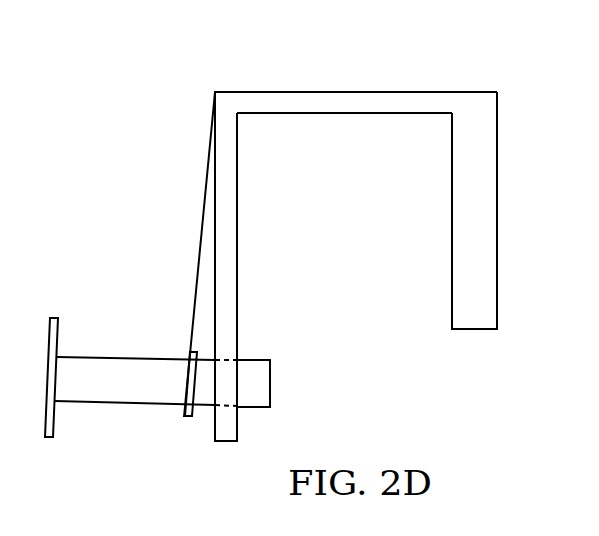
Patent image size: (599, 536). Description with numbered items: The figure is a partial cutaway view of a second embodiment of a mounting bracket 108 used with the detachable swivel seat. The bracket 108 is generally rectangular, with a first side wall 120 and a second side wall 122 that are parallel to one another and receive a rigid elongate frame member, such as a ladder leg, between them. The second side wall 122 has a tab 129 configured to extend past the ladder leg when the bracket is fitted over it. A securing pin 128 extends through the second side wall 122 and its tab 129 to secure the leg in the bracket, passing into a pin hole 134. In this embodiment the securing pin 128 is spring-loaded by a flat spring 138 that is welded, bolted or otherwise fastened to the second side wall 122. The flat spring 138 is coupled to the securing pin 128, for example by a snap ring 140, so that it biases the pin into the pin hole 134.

The mounting bracket 108 is at (352, 232).
The first side wall 120 is at (497, 207).
The second side wall 122 is at (215, 197).
The securing pin 128 is at (52, 317).
The tab 129 is at (226, 441).
The pin hole 134 is at (232, 357).
The flat spring 138 is at (200, 250).
The snap ring 140 is at (190, 419).